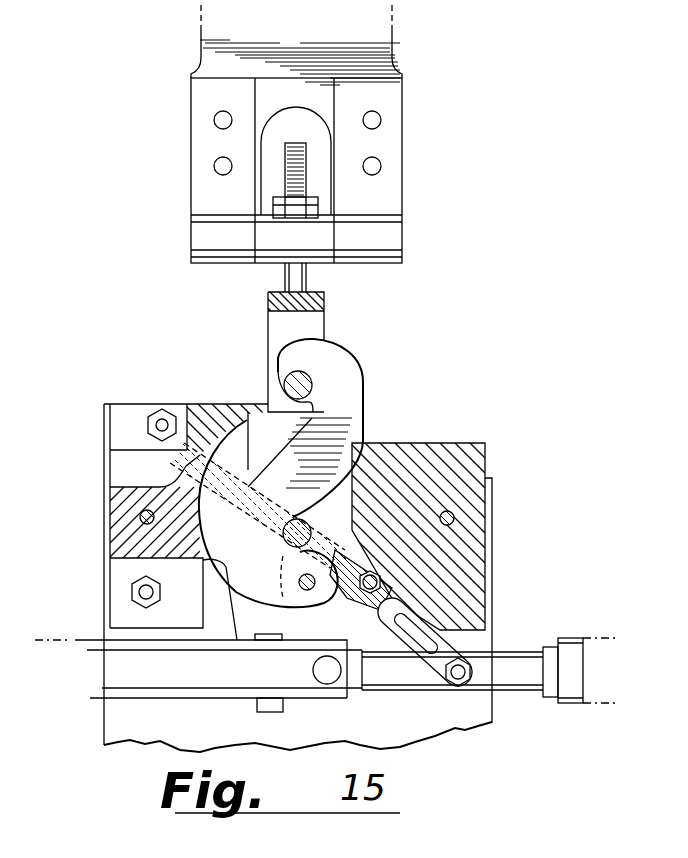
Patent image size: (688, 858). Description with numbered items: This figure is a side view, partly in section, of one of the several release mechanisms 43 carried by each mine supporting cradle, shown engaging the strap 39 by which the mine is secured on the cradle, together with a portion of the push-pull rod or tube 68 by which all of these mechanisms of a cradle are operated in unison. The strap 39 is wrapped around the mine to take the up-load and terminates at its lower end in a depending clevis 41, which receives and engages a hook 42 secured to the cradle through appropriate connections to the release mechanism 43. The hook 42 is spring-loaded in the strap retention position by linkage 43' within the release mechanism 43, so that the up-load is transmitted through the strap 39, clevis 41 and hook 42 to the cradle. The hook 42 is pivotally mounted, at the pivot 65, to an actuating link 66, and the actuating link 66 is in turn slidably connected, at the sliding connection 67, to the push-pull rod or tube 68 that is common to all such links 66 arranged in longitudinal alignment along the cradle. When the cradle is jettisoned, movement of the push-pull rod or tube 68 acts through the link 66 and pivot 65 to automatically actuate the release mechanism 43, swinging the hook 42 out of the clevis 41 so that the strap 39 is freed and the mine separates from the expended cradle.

The strap 39 is at (377, 40).
The clevis 41 is at (308, 325).
The hook 42 is at (350, 392).
The release mechanism 43 is at (448, 583).
The linkage 43' is at (441, 576).
The pivot 65 is at (318, 518).
The actuating link 66 is at (420, 620).
The sliding connection 67 is at (458, 690).
The push-pull rod or tube 68 is at (222, 677).